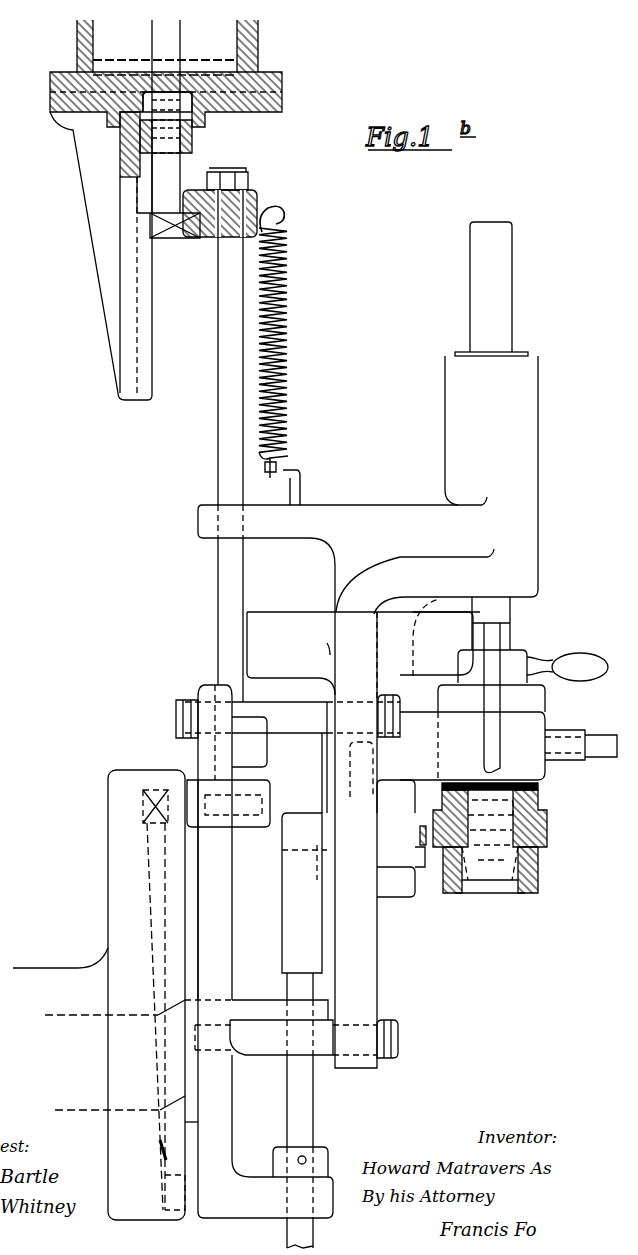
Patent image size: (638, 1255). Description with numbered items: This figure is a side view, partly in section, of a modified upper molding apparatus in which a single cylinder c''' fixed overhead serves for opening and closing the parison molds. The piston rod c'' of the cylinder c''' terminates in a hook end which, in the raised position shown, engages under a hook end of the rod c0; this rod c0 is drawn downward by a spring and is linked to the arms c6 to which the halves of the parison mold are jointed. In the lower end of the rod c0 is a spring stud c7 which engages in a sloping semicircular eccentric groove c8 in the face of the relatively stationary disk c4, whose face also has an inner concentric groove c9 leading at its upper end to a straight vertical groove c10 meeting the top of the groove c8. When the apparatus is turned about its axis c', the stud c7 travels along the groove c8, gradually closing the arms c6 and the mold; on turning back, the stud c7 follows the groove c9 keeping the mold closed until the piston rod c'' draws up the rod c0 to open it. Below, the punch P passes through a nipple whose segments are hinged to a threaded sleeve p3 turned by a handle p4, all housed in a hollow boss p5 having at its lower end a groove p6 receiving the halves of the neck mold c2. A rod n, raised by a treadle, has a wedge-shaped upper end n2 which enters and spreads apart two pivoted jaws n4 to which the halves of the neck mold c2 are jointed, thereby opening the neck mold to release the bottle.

The cylinder c''' is at (166, 210).
The piston rod c'' is at (168, 129).
The rod c0 is at (220, 435).
The punch P is at (491, 406).
The sleeve p3 is at (492, 640).
The handle p4 is at (567, 667).
The hollow boss p5 is at (472, 732).
The groove p6 is at (547, 808).
The arms c6 is at (492, 698).
The neck mold c2 is at (490, 846).
The upper end of rod n n2 is at (304, 893).
The pivoted jaws n4 is at (388, 819).
The rod n is at (300, 1110).
The axis c' is at (99, 995).
The spring stud c7 is at (143, 801).
The eccentric groove c8 is at (160, 1016).
The vertical groove c10 is at (169, 1016).
The concentric groove c9 is at (169, 1152).
The disk c4 is at (154, 1169).